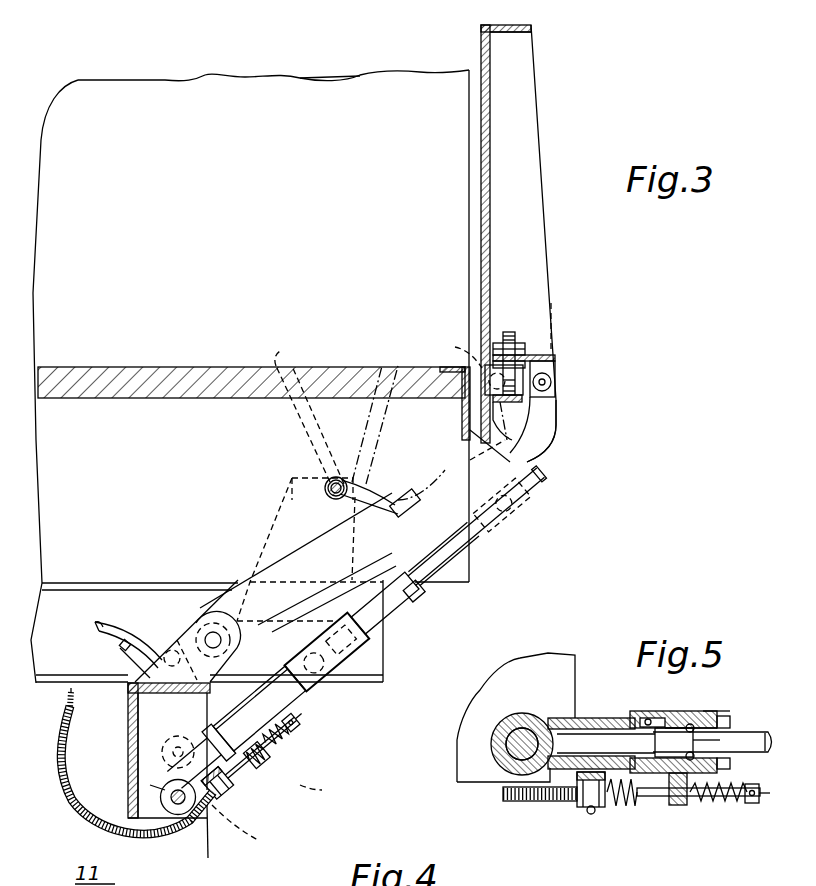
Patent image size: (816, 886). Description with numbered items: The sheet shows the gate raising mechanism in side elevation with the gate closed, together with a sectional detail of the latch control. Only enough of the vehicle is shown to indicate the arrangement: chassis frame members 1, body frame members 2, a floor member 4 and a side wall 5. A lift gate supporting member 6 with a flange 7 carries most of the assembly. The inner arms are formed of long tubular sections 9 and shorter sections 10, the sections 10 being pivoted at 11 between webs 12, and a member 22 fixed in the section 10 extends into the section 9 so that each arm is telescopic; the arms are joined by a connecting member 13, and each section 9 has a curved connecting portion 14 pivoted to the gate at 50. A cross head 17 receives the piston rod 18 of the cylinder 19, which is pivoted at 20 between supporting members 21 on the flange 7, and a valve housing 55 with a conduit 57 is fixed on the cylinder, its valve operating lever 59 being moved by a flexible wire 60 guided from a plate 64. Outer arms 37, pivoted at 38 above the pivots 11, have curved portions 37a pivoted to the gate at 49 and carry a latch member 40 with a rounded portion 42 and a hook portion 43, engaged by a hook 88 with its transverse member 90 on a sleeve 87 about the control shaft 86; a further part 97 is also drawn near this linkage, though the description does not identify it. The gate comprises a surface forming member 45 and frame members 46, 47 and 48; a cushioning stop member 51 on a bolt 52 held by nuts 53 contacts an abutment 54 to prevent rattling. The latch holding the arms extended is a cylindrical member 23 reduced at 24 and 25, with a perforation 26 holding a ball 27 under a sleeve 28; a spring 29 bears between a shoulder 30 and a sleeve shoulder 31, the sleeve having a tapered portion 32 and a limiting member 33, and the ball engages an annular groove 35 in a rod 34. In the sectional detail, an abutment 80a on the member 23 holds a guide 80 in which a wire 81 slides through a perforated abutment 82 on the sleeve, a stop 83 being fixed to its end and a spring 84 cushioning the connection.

In FIG. 3, the chassis frame member 1 is at (40, 617).
In FIG. 3, the body frame member 2 is at (60, 522).
In FIG. 3, the floor member 4 is at (187, 376).
In FIG. 3, the side wall 5 is at (352, 88).
In FIG. 3, the lift gate supporting member 6 is at (129, 738).
In FIG. 3, the flange 7 is at (169, 750).
In FIG. 3, the inner arm long section 9 is at (449, 549).
In FIG. 3, the inner arm short section 10 is at (219, 784).
In FIG. 5, the pivot 11 is at (522, 728).
In FIG. 3, the web 12 is at (148, 775).
In FIG. 5, the web 12 is at (546, 662).
In FIG. 3, the connecting member 13 is at (355, 672).
In FIG. 3, the curved connecting portion 14 is at (541, 448).
In FIG. 3, the cross head 17 is at (502, 505).
In FIG. 3, the piston rod 18 is at (422, 503).
In FIG. 3, the cylinder 19 is at (275, 562).
In FIG. 3, the cylinder pivot 20 is at (213, 632).
In FIG. 3, the supporting member 21 is at (192, 636).
In FIG. 3, the telescopic member 22 is at (259, 708).
In FIG. 3, the cylindrical member 23 is at (246, 832).
In FIG. 5, the cylindrical member 23 is at (563, 718).
In FIG. 5, the reduced portion 24 is at (622, 727).
In FIG. 5, the further reduced portion 25 is at (718, 765).
In FIG. 5, the perforation 26 is at (672, 775).
In FIG. 5, the ball 27 is at (684, 729).
In FIG. 3, the sleeve 28 is at (325, 793).
In FIG. 5, the sleeve 28 is at (655, 716).
In FIG. 5, the spring 29 is at (640, 720).
In FIG. 5, the shoulder 30 is at (632, 740).
In FIG. 5, the sleeve shoulder 31 is at (680, 720).
In FIG. 5, the tapered portion 32 is at (710, 716).
In FIG. 5, the limiting member 33 is at (722, 716).
In FIG. 5, the rod 34 is at (756, 738).
In FIG. 5, the annular groove 35 is at (700, 738).
In FIG. 3, the outer arm 37 is at (327, 652).
In FIG. 3, the curved portion 37a is at (490, 457).
In FIG. 3, the outer arm pivot 38 is at (162, 756).
In FIG. 3, the latch member 40 is at (342, 527).
In FIG. 3, the rounded portion 42 is at (414, 591).
In FIG. 3, the hook portion 43 is at (429, 425).
In FIG. 3, the surface forming member 45 is at (480, 173).
In FIG. 3, the hinge edge frame member 46 is at (556, 358).
In FIG. 3, the end frame member 47 is at (528, 32).
In FIG. 3, the side frame member 48 is at (526, 108).
In FIG. 3, the gate pivot 49 is at (467, 362).
In FIG. 3, the gate pivot 50 is at (552, 383).
In FIG. 3, the cushioning stop member 51 is at (503, 413).
In FIG. 3, the bolt 52 is at (510, 338).
In FIG. 3, the nut 53 is at (526, 352).
In FIG. 3, the abutment 54 is at (495, 433).
In FIG. 3, the valve housing 55 is at (160, 638).
In FIG. 3, the conduit 57 is at (98, 624).
In FIG. 3, the valve operating lever 59 is at (140, 660).
In FIG. 3, the flexible wire 60 is at (121, 646).
In FIG. 3, the plate 64 is at (290, 490).
In FIG. 3, the guide 80 is at (62, 782).
In FIG. 5, the guide 80 is at (540, 802).
In FIG. 3, the abutment 80a is at (217, 783).
In FIG. 5, the abutment 80a is at (585, 810).
In FIG. 3, the wire 81 is at (68, 698).
In FIG. 5, the wire 81 is at (648, 800).
In FIG. 3, the perforated abutment 82 is at (256, 755).
In FIG. 5, the perforated abutment 82 is at (682, 808).
In FIG. 3, the stop 83 is at (294, 720).
In FIG. 5, the stop 83 is at (752, 805).
In FIG. 3, the spring 84 is at (276, 734).
In FIG. 5, the spring 84 is at (722, 802).
In FIG. 3, the control shaft 86 is at (327, 491).
In FIG. 3, the sleeve 87 is at (331, 481).
In FIG. 3, the hook 88 is at (368, 482).
In FIG. 3, the latch-engaging transverse member 90 is at (407, 486).
In FIG. 3, the link 97 is at (284, 362).